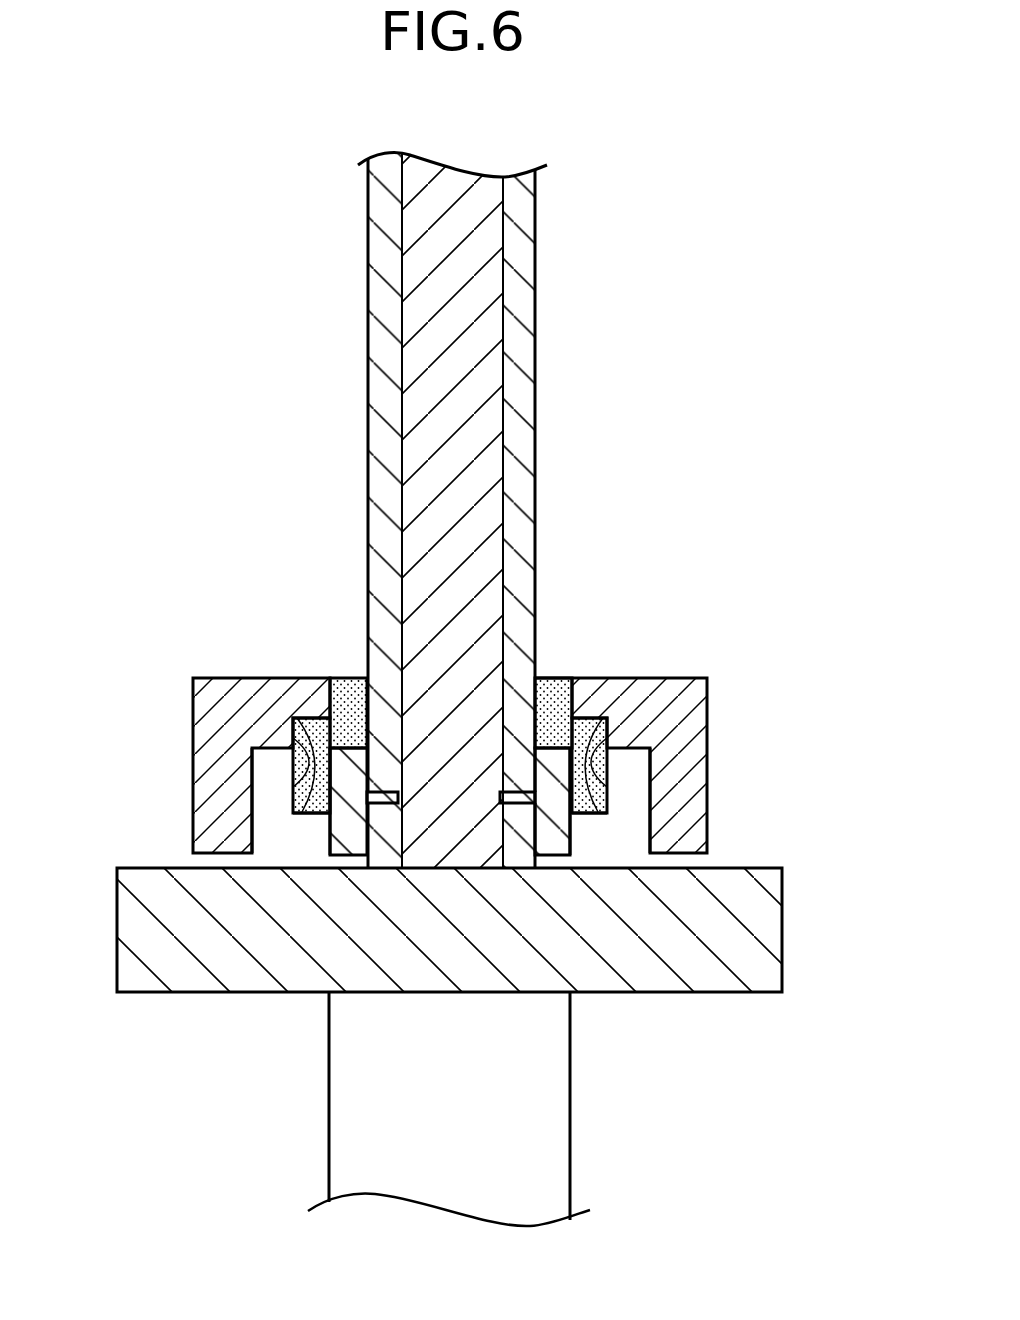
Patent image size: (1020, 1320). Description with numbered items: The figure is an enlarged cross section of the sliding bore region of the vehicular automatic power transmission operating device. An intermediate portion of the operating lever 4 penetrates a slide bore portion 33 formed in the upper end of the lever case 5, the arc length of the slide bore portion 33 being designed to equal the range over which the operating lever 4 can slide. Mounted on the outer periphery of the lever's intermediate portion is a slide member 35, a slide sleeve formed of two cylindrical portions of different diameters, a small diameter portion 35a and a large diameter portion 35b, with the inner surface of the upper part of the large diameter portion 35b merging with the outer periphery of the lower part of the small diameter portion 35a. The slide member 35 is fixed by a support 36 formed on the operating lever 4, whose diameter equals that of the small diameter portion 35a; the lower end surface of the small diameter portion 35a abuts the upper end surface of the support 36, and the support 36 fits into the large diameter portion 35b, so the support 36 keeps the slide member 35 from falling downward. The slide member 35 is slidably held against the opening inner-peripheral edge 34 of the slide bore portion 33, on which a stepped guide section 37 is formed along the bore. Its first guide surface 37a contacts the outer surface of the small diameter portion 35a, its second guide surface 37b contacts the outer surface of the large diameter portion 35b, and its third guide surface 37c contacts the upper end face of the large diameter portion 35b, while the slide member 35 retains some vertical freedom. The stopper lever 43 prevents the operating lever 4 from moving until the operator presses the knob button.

The operating lever 4 is at (536, 364).
The lever case 5 is at (227, 678).
The slide bore portion 33 is at (560, 660).
The opening inner-peripheral edge 34 is at (442, 682).
The slide member 35 is at (442, 745).
The small diameter portion 35a is at (350, 692).
The large diameter portion 35b is at (302, 762).
The support 36 is at (571, 821).
The guide section 37 is at (371, 931).
The first guide surface 37a is at (362, 740).
The second guide surface 37b is at (252, 830).
The third guide surface 37c is at (295, 813).
The stopper lever 43 is at (765, 932).